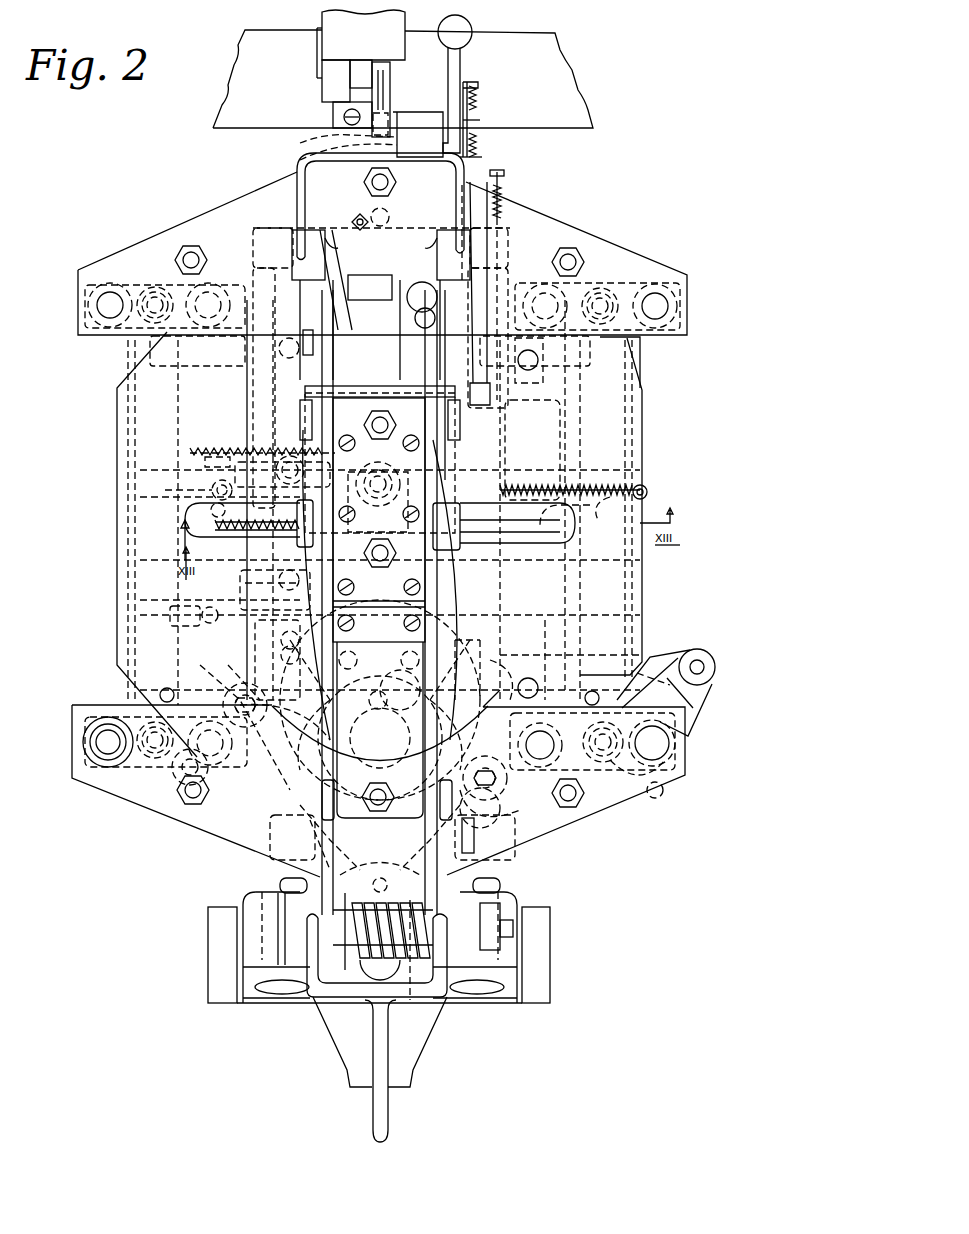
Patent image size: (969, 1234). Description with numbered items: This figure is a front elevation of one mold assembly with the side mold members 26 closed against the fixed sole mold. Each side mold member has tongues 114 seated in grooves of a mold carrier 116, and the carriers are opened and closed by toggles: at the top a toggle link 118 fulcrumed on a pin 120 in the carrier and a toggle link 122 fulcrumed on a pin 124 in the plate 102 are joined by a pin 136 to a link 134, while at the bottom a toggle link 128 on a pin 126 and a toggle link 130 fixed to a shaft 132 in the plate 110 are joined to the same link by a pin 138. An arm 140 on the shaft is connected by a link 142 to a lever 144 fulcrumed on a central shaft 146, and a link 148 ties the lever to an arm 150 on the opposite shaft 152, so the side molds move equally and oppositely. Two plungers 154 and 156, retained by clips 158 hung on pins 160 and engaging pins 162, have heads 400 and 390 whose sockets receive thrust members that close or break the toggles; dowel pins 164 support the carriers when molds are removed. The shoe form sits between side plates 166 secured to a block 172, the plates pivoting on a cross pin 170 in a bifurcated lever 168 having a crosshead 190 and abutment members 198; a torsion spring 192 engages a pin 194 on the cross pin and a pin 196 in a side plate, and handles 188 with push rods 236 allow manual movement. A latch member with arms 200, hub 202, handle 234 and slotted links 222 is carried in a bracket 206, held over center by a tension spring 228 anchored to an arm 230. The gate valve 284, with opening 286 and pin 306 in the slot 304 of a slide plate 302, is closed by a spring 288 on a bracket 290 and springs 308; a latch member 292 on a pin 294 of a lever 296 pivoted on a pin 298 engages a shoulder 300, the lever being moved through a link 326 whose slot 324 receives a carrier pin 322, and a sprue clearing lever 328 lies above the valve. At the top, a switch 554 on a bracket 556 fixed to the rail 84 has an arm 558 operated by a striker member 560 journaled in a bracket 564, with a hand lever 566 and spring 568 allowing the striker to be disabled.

The rail 84 is at (572, 88).
The switch 554 is at (333, 42).
The bracket 556 is at (323, 88).
The arm 558 is at (390, 98).
The striker member 560 is at (330, 141).
The bracket 564 is at (401, 177).
The hand lever 566 is at (460, 62).
The spring 568 is at (478, 98).
The bracket 206 is at (298, 188).
The hub 202 is at (385, 230).
The arms 200 is at (338, 235).
The tension spring 228 is at (500, 190).
The arm 230 is at (487, 275).
The plate 102 is at (550, 222).
The toggle link 118 is at (580, 290).
The pin 120 is at (545, 305).
The pin 136 is at (605, 300).
The toggle link 122 is at (650, 290).
The pin 124 is at (658, 307).
The link 134 is at (627, 352).
The mold carrier 116 is at (118, 487).
The central shaft 146 is at (383, 602).
The side plates 166 is at (377, 502).
The block 172 is at (412, 412).
The sprue clearing lever 328 is at (380, 447).
The handle 234 is at (420, 300).
The links 222 is at (322, 352).
The push rods 236 is at (306, 408).
The injection port opening 286 is at (420, 460).
The side mold members 26 is at (262, 375).
The tongues 114 is at (540, 450).
The handles 188 is at (190, 530).
The pin 298 is at (260, 558).
The latch member 292 is at (255, 400).
The shoulder 300 is at (246, 430).
The springs 308 is at (240, 455).
The slide plate 302 is at (195, 475).
The longitudinal slot 304 is at (173, 488).
The pin 306 is at (182, 515).
The pin 294 is at (300, 455).
The lever 296 is at (255, 590).
The link 326 is at (172, 610).
The longitudinal slot 324 is at (178, 660).
The pin 322 is at (250, 660).
The dowel pins 164 is at (165, 688).
The link 148 is at (255, 665).
The gate valve 284 is at (530, 485).
The spring 288 is at (595, 485).
The bracket 290 is at (580, 520).
The pin 138 is at (607, 670).
The pin 162 is at (385, 738).
The lever 144 is at (484, 670).
The pin 160 is at (250, 690).
The plate 110 is at (618, 805).
The shaft 152 is at (108, 755).
The arm 150 is at (130, 780).
The abutment members 198 is at (330, 790).
The plunger 154 is at (265, 850).
The shaft 132 is at (658, 744).
The toggle link 128 is at (605, 768).
The pin 126 is at (562, 805).
The toggle link 130 is at (640, 800).
The link 142 is at (662, 660).
The arm 140 is at (703, 698).
The clips 158 is at (438, 756).
The pin 196 is at (505, 870).
The plunger 156 is at (530, 902).
The head 400 is at (248, 884).
The head 390 is at (515, 1000).
The cross pin 170 is at (295, 990).
The crosshead 190 is at (357, 995).
The pin 194 is at (352, 890).
The torsion spring 192 is at (405, 990).
The bifurcated lever 168 is at (415, 1040).